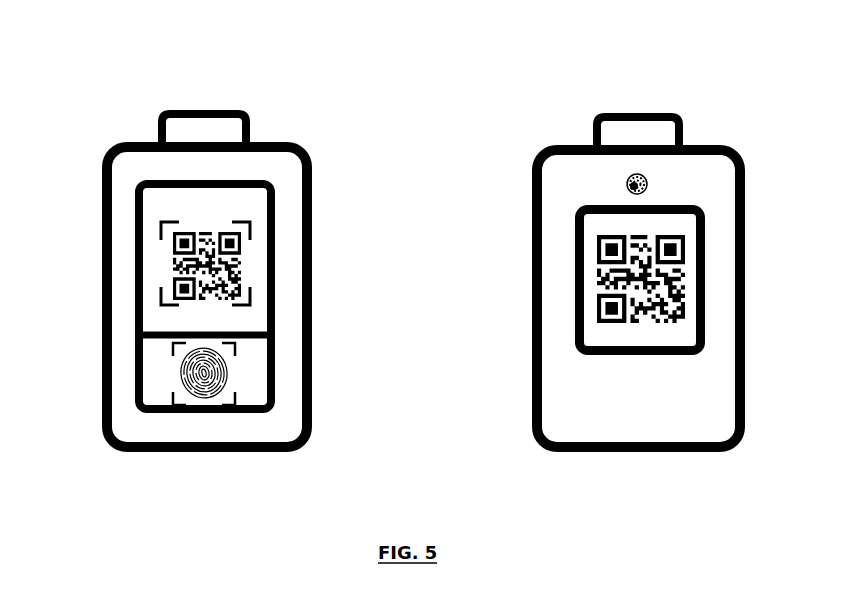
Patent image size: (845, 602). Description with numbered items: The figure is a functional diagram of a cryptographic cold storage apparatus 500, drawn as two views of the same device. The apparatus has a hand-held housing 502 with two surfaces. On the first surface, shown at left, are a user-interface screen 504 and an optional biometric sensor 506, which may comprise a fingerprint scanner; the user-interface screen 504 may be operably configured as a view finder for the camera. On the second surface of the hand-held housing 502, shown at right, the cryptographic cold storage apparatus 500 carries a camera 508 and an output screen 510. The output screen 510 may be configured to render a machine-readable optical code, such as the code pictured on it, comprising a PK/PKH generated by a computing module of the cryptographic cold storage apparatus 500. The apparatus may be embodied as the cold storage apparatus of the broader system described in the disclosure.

The cryptographic cold storage apparatus 500 is at (41, 64).
The hand-held housing 502 is at (252, 128).
The user-interface screen 504 is at (134, 236).
The biometric sensor 506 is at (181, 371).
The camera 508 is at (647, 177).
The output screen 510 is at (704, 277).